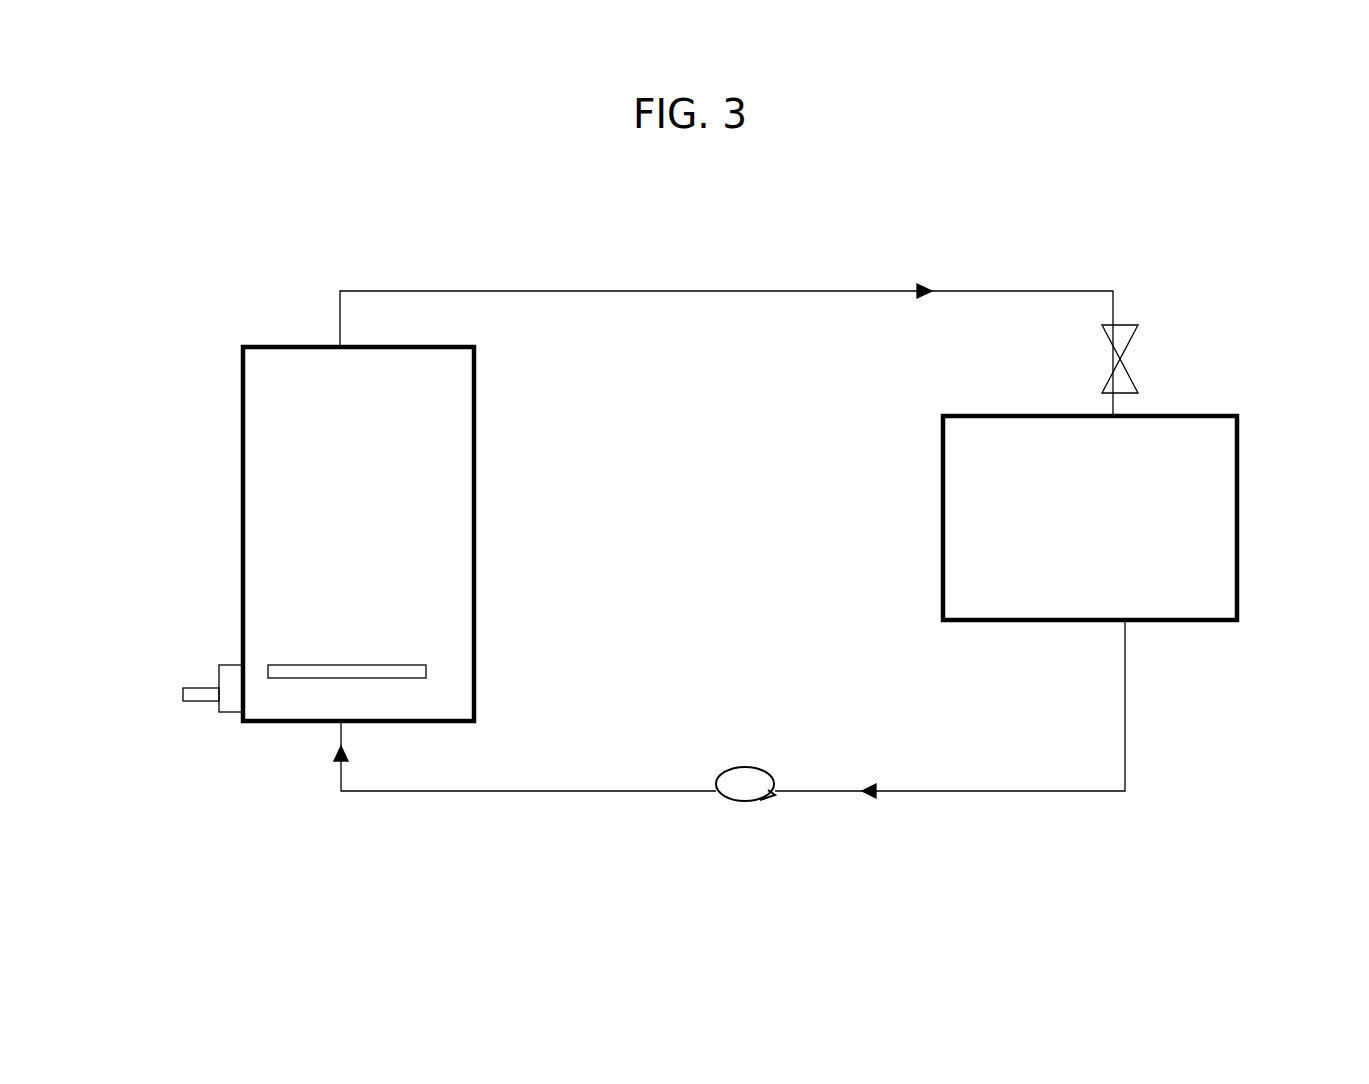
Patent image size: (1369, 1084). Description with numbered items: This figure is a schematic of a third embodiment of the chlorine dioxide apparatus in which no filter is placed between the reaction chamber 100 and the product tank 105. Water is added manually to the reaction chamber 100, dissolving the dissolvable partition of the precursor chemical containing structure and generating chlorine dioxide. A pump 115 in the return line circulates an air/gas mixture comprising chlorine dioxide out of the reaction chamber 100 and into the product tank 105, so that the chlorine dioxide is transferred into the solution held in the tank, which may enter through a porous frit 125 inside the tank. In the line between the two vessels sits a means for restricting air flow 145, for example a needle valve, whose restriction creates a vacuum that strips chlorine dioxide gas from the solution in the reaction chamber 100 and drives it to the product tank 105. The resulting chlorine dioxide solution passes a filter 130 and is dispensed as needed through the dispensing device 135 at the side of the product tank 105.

The reaction chamber 100 is at (1090, 518).
The product tank 105 is at (267, 347).
The pump 115 is at (738, 802).
The porous frit 125 is at (352, 427).
The filter 130 is at (232, 700).
The dispensing device 135 is at (208, 685).
The means for restricting air flow 145 is at (1140, 363).